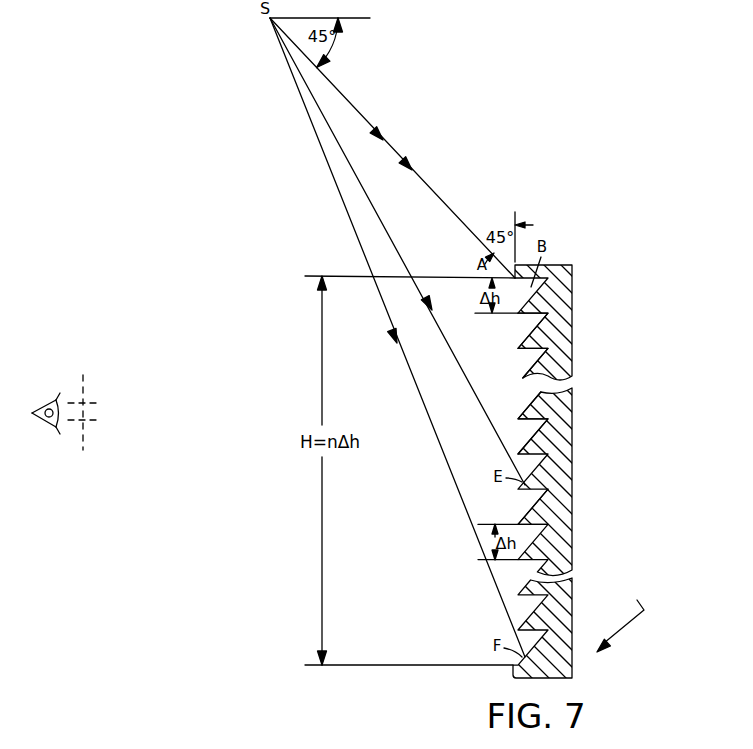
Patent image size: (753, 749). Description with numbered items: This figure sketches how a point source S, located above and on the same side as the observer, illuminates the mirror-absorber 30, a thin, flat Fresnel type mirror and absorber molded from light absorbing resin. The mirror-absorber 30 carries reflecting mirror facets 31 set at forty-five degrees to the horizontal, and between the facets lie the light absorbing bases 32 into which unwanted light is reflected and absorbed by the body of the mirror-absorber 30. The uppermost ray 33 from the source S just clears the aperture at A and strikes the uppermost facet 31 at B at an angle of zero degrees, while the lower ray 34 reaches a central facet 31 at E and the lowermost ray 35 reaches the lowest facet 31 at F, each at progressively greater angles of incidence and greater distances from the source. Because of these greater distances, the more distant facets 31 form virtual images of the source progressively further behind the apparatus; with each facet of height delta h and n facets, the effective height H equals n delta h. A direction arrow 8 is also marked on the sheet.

The mirror-absorber 30 is at (586, 430).
The reflecting mirror facets 31 is at (524, 405).
The light absorbing bases 32 is at (522, 318).
The light ray at 45 degrees to point A 33 is at (447, 206).
The lower ray 34 is at (403, 260).
The lower ray 35 is at (386, 310).
The viewing direction of FIG. 8 is at (620, 626).